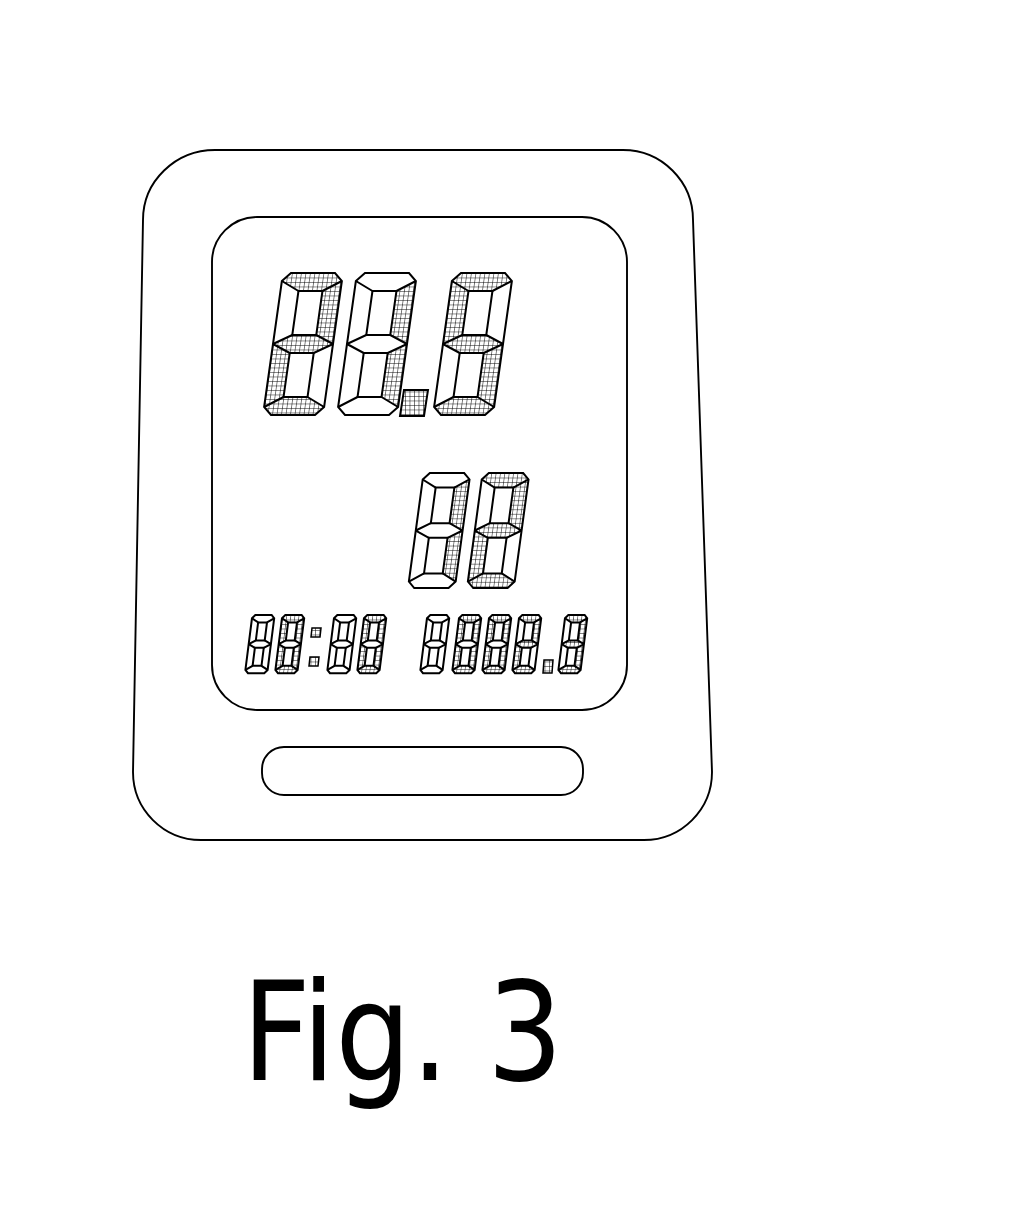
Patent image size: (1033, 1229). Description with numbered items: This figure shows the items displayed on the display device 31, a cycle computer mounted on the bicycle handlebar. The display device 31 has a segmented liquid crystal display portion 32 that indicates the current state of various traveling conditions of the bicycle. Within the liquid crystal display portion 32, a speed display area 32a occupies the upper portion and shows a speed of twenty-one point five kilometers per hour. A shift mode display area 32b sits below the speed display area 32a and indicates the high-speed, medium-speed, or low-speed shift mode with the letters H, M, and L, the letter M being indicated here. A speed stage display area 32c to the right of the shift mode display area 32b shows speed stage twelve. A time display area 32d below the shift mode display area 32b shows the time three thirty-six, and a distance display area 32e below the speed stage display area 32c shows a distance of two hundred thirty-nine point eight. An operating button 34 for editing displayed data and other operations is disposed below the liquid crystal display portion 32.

The display device 31 is at (590, 130).
The liquid crystal display portion 32 is at (610, 273).
The speed display area 32a is at (247, 342).
The shift mode display area 32b is at (318, 508).
The speed stage display area 32c is at (540, 492).
The time display area 32d is at (242, 648).
The distance display area 32e is at (600, 630).
The operating button 34 is at (576, 757).